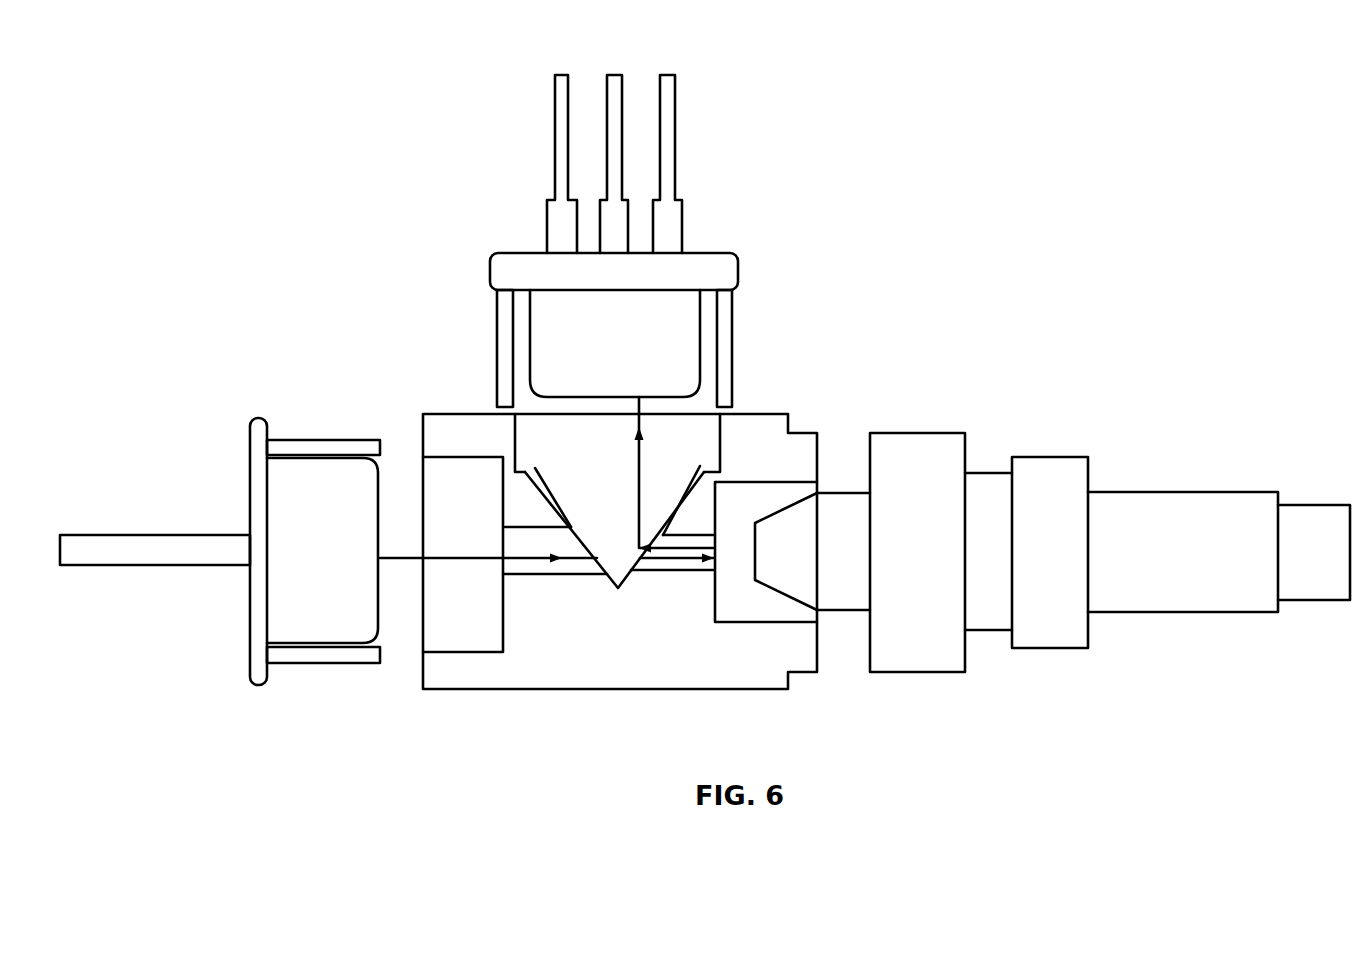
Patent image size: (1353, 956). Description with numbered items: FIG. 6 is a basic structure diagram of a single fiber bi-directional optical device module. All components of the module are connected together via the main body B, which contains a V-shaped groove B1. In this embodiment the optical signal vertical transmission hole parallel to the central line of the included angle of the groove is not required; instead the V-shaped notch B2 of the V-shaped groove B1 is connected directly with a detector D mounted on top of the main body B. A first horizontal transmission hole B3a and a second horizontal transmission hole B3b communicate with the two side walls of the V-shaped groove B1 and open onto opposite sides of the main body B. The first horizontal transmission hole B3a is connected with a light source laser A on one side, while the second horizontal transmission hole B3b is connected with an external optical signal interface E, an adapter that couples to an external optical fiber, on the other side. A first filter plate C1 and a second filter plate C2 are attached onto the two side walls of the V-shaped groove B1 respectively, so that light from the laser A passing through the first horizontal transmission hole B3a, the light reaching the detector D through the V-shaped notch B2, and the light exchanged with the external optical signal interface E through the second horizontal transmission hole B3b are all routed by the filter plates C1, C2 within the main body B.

The laser A is at (320, 505).
The main body B is at (660, 657).
The V-shaped groove B1 is at (640, 543).
The V-shaped notch B2 is at (512, 443).
The first horizontal transmission hole B3a is at (533, 545).
The second horizontal transmission hole B3b is at (693, 540).
The first filter plate C1 is at (548, 497).
The second filter plate C2 is at (680, 495).
The detector D is at (652, 325).
The external optical signal interface E is at (1053, 512).